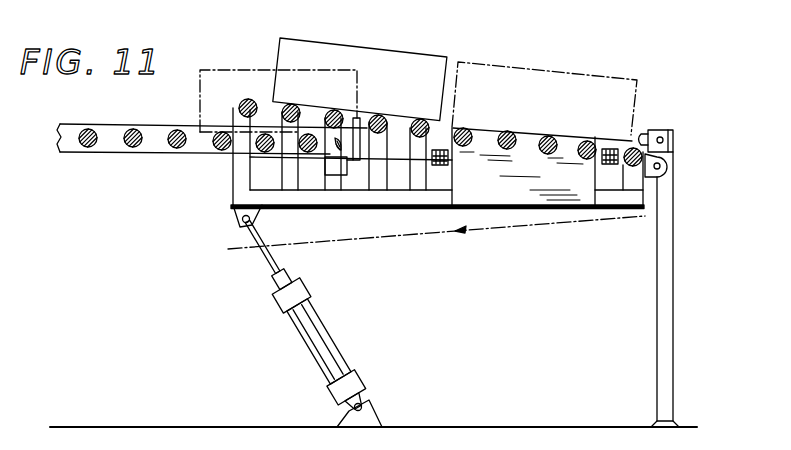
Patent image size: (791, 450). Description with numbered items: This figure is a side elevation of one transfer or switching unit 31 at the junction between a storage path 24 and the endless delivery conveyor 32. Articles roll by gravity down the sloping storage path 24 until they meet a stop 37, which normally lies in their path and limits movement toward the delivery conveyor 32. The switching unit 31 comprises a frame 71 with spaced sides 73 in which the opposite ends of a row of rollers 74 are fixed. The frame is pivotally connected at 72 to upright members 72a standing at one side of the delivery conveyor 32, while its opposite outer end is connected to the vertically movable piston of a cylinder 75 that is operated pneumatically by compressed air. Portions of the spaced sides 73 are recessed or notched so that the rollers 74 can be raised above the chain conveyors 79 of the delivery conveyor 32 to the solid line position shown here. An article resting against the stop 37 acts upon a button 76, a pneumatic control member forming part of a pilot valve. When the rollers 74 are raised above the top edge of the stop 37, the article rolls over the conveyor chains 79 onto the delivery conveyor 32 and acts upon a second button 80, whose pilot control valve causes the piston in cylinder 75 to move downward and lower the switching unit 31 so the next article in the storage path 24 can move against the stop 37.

The storage path 24 is at (156, 153).
The transfer or switching unit 31 is at (490, 209).
The endless delivery conveyor 32 is at (614, 134).
The stop 37 is at (359, 120).
The frame 71 is at (563, 115).
The pivotal connection 72 is at (662, 167).
The upright member 72a is at (674, 224).
The spaced sides 73 is at (240, 172).
The rollers 74 is at (242, 103).
The cylinder 75 is at (315, 353).
The button 76 is at (348, 167).
The chain conveyors 79 is at (449, 158).
The button 80 is at (650, 130).